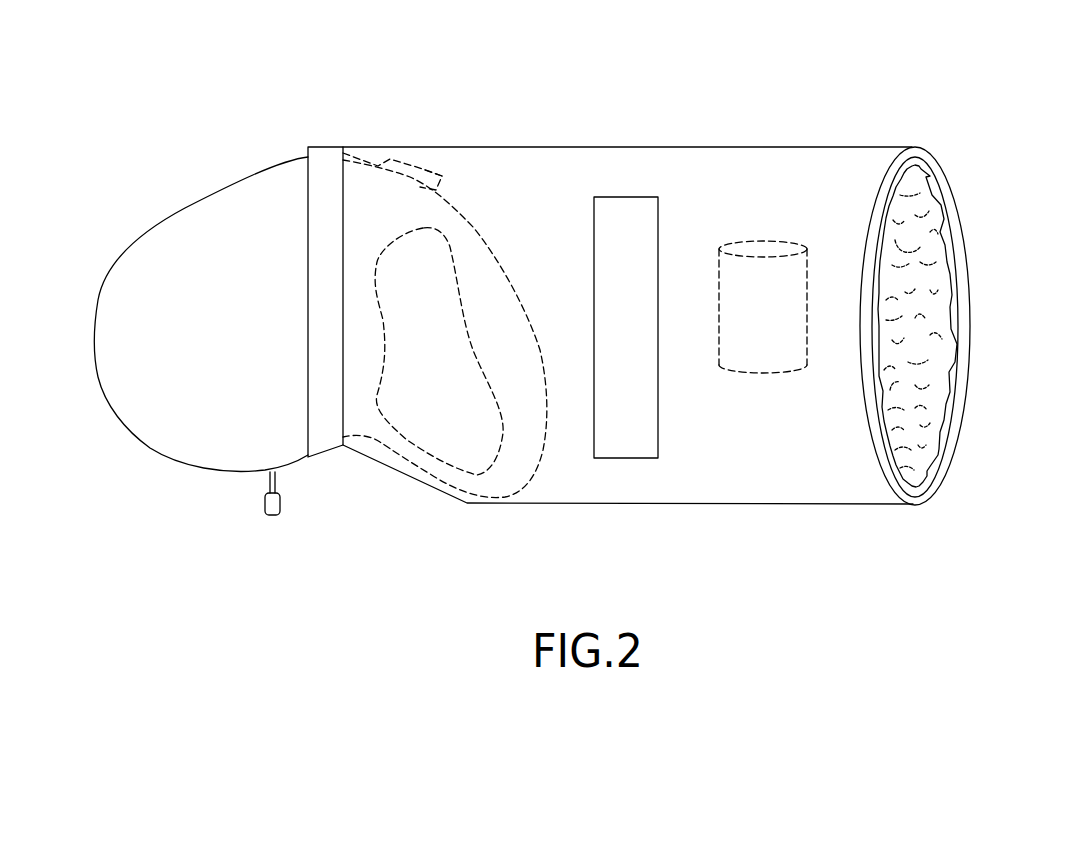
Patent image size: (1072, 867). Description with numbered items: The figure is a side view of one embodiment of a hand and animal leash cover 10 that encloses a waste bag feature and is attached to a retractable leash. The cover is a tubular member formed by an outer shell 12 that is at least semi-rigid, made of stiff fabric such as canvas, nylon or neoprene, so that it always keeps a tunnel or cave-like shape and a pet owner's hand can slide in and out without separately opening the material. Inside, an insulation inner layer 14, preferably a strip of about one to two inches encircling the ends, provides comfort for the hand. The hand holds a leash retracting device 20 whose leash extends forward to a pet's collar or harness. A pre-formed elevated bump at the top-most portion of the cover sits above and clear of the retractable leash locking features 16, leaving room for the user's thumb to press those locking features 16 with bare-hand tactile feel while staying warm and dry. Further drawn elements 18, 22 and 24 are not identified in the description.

The leash cover 10 is at (900, 552).
The outer shell 12 is at (918, 160).
The insulation inner layer 14 is at (938, 215).
The retractable leash locking features 16 is at (425, 175).
The rigid panel 18 is at (623, 212).
The leash retracting device 20 is at (362, 410).
The cylindrical container 22 is at (777, 277).
The end flap closure 24 is at (320, 172).